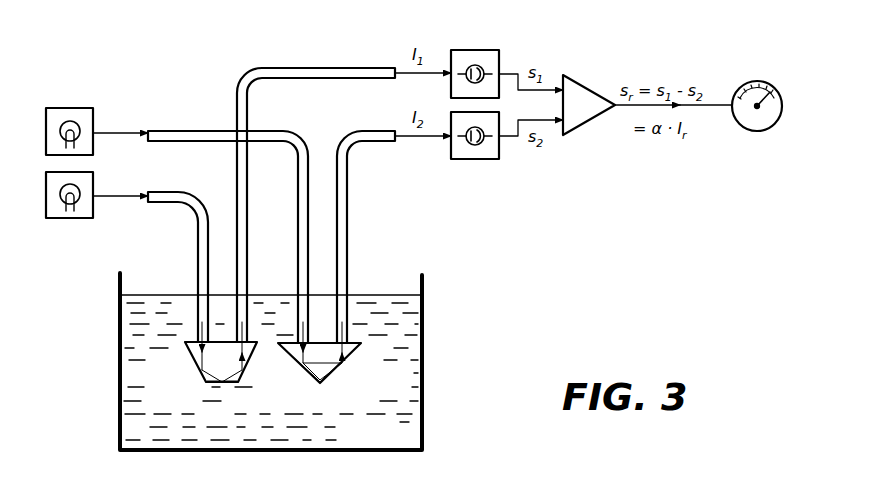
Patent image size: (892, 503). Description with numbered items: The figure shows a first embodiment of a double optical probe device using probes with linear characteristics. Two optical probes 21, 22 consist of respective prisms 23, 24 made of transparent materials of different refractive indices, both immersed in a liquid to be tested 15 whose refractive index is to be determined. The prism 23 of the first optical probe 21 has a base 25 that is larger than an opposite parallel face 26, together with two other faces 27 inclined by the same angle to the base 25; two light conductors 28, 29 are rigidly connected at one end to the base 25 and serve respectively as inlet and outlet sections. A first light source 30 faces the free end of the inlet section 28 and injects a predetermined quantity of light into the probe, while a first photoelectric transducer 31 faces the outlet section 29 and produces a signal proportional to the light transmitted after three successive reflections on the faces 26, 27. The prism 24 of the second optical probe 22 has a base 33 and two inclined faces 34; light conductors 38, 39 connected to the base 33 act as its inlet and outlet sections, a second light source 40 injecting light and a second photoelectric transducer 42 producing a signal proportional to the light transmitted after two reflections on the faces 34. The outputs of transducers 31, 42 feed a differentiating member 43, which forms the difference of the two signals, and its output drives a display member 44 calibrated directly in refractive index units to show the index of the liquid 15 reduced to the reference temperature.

The liquid to be tested 15 is at (135, 428).
The first optical probe 21 is at (162, 384).
The second optical probe 22 is at (375, 374).
The prism 23 is at (195, 358).
The prism 24 is at (326, 370).
The base 25 is at (252, 340).
The opposite parallel face 26 is at (217, 385).
The inclined faces 27 is at (200, 381).
The light conductor 28 is at (165, 203).
The light conductor 29 is at (315, 68).
The first light source 30 is at (80, 218).
The first photoelectric transducer 31 is at (470, 50).
The base 33 is at (358, 340).
The inclined faces 34 is at (308, 373).
The light conductor 38 is at (172, 130).
The light conductor 39 is at (388, 142).
The second light source 40 is at (67, 108).
The second photoelectric transducer 42 is at (477, 160).
The differentiating member 43 is at (582, 88).
The display member 44 is at (752, 82).